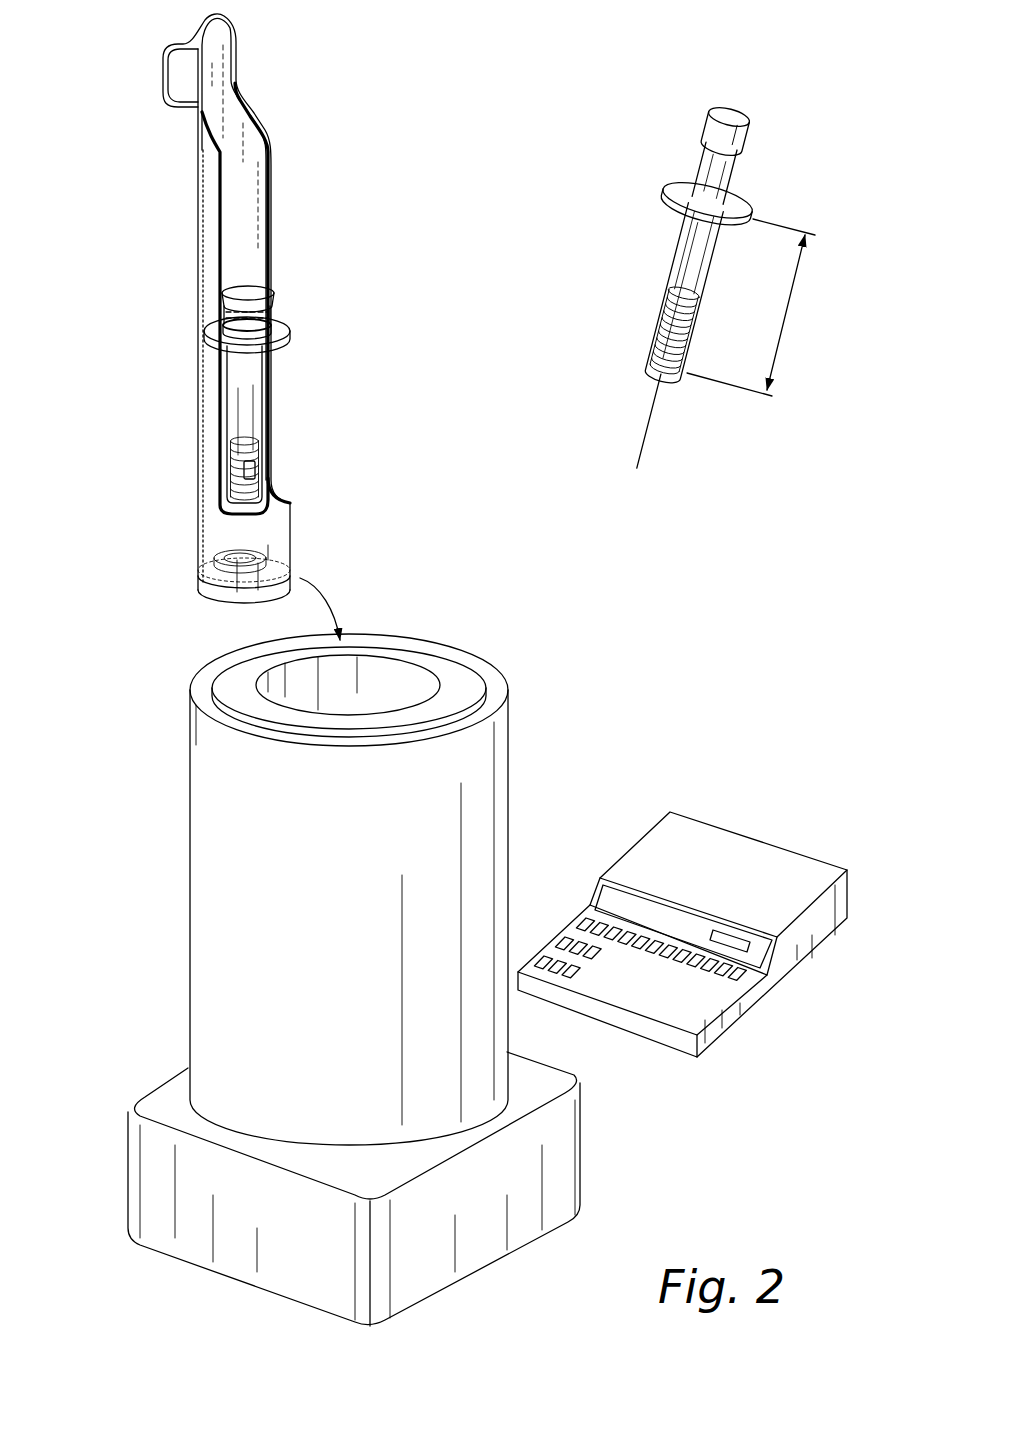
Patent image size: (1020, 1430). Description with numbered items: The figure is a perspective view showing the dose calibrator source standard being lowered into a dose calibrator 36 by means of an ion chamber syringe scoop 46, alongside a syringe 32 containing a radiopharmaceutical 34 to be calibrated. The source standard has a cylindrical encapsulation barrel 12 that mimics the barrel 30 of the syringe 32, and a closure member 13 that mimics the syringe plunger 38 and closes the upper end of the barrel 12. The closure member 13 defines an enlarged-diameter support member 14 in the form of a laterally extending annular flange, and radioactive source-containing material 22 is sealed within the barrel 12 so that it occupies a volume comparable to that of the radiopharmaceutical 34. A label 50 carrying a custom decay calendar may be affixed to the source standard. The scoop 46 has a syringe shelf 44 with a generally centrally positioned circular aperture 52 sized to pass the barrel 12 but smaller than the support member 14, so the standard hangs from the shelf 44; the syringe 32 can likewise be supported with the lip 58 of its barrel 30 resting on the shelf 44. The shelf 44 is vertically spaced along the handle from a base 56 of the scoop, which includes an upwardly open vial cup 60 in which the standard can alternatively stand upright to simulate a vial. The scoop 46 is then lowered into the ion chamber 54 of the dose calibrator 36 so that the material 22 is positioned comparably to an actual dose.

The encapsulation barrel 12 is at (246, 358).
The closure member 13 is at (250, 287).
The support member 14 is at (276, 335).
The radioactive source-containing material 22 is at (223, 472).
The barrel of syringe 30 is at (665, 270).
The syringe 32 is at (699, 288).
The radiopharmaceutical 34 is at (672, 340).
The dose calibrator 36 is at (337, 943).
The plunger 38 is at (745, 142).
The syringe shelf 44 is at (290, 335).
The ion chamber syringe scoop 46 is at (205, 193).
The label 50 is at (258, 470).
The circular aperture 52 is at (243, 352).
The ion chamber 54 is at (392, 695).
The base of scoop 56 is at (203, 588).
The lip of syringe barrel 58 is at (737, 206).
The vial cup 60 is at (264, 557).